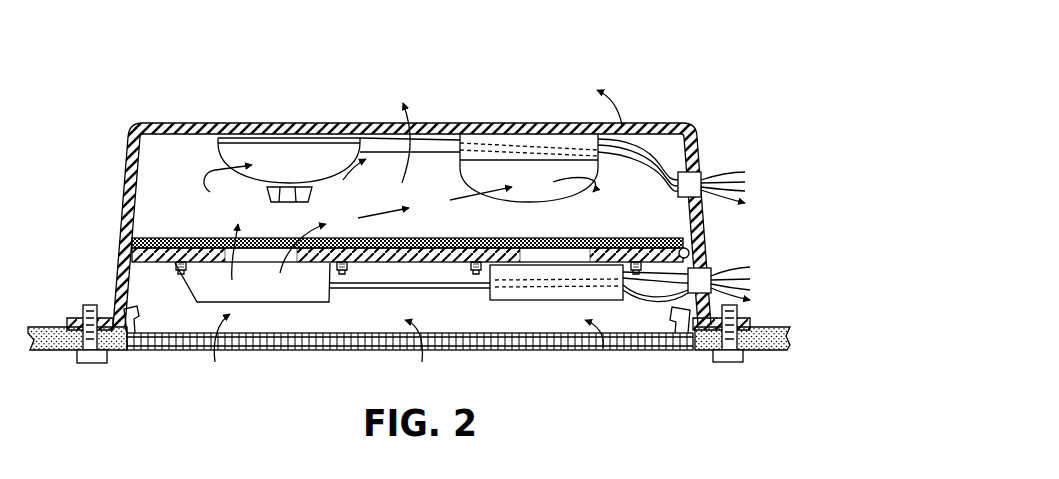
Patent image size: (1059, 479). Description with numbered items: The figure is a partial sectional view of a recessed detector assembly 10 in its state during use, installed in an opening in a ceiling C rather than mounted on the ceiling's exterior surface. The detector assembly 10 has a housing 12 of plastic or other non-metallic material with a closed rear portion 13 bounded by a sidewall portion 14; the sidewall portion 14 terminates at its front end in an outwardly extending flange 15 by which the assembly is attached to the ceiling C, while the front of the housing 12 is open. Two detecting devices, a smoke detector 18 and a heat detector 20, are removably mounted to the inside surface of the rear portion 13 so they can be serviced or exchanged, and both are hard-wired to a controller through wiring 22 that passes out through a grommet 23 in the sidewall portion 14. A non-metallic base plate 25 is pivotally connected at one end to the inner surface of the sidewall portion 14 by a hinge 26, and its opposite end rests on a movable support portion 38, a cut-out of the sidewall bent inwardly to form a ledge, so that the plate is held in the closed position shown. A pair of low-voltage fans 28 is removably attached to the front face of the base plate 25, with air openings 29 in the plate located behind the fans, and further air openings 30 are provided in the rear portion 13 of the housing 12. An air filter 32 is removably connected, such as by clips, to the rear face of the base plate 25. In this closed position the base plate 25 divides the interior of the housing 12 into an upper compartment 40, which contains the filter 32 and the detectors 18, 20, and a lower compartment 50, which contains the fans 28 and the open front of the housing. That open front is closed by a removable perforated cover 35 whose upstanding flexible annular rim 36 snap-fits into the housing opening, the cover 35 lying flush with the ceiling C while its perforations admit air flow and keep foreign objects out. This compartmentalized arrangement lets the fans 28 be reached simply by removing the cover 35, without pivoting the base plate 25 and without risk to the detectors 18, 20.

The detector assembly 10 is at (548, 82).
The housing 12 is at (679, 121).
The rear portion 13 is at (483, 121).
The sidewall portion 14 is at (118, 228).
The flange 15 is at (747, 350).
The smoke detector 18 is at (206, 178).
The heat detector 20 is at (467, 176).
The wiring 22 is at (660, 189).
The grommet 23 is at (701, 172).
The base plate 25 is at (350, 248).
The hinge 26 is at (690, 253).
The low-voltage fans 28 is at (257, 297).
The air openings 29 is at (262, 252).
The air openings 30 is at (192, 122).
The air filter 32 is at (432, 239).
The cover 35 is at (190, 350).
The annular rim 36 is at (138, 313).
The movable support portion 38 is at (132, 267).
The upper compartment 40 is at (182, 229).
The lower compartment 50 is at (374, 328).
The ceiling C is at (757, 347).